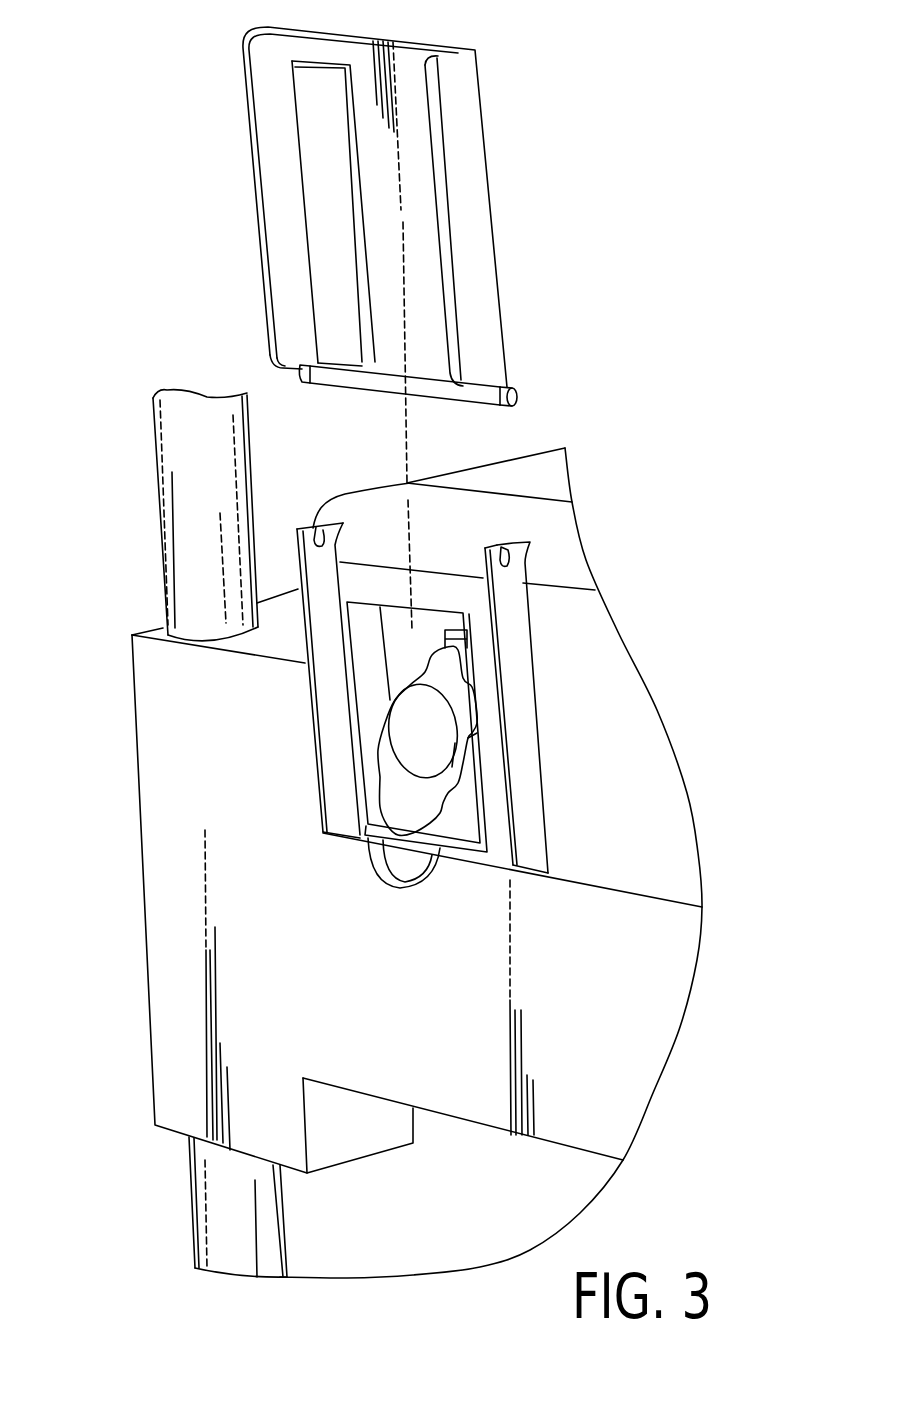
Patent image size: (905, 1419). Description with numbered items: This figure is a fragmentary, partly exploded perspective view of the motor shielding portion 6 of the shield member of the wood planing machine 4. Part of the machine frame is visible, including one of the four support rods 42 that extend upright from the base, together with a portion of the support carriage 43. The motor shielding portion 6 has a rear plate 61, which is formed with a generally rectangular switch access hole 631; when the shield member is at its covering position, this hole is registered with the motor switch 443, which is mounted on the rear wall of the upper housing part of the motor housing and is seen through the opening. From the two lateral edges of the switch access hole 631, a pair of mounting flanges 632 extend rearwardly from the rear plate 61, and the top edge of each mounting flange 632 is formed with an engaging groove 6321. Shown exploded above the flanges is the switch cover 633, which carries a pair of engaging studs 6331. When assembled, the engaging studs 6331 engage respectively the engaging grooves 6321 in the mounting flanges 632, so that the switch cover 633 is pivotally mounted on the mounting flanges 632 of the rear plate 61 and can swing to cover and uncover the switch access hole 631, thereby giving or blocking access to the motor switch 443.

The wood planing machine 4 is at (318, 833).
The support rod 42 is at (170, 518).
The support carriage 43 is at (480, 1095).
The motor switch 443 is at (437, 720).
The motor shielding portion 6 is at (480, 832).
The rear plate 61 is at (650, 805).
The switch access hole 631 is at (367, 693).
The mounting flange 632 is at (514, 643).
The engaging groove 6321 is at (340, 548).
The switch cover 633 is at (390, 43).
The engaging stud 6331 is at (512, 385).